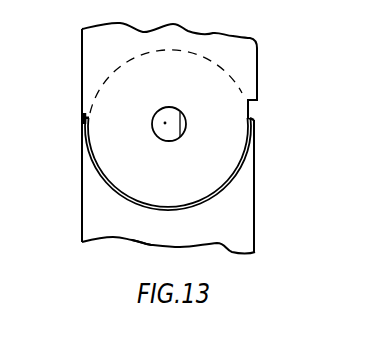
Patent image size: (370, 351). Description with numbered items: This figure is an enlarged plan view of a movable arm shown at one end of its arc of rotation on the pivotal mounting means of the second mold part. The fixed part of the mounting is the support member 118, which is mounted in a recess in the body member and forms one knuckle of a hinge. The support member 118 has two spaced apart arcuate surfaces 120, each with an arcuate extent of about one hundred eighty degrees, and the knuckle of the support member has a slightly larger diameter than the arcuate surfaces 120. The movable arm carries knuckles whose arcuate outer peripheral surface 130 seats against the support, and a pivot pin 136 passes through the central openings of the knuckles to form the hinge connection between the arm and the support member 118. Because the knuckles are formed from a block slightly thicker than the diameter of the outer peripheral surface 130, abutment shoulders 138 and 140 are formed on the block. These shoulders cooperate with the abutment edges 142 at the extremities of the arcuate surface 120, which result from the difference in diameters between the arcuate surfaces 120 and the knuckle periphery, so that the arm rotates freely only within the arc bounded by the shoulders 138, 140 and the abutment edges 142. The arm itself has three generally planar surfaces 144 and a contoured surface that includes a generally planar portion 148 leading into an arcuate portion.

The support member 118 is at (241, 220).
The arcuate surfaces 120 is at (142, 200).
The arcuate outer peripheral surface 130 is at (170, 204).
The pivot pin 136 is at (169, 118).
The abutment shoulder 138 is at (84, 115).
The abutment shoulder 140 is at (258, 100).
The abutment edges 142 is at (84, 119).
The planar surfaces 144 is at (259, 51).
The planar portion 148 is at (82, 43).